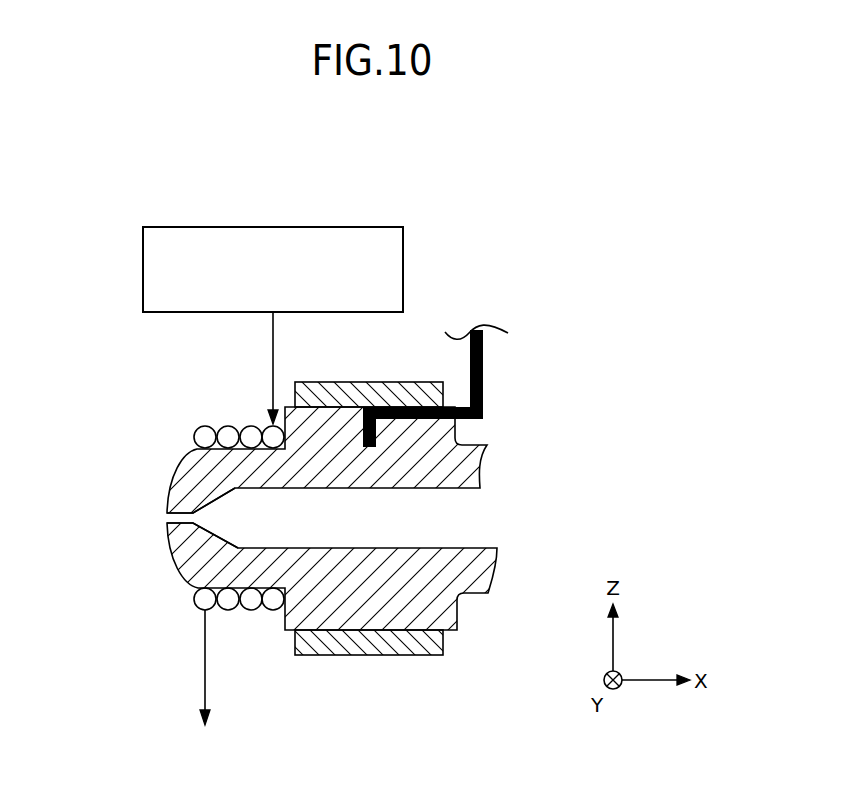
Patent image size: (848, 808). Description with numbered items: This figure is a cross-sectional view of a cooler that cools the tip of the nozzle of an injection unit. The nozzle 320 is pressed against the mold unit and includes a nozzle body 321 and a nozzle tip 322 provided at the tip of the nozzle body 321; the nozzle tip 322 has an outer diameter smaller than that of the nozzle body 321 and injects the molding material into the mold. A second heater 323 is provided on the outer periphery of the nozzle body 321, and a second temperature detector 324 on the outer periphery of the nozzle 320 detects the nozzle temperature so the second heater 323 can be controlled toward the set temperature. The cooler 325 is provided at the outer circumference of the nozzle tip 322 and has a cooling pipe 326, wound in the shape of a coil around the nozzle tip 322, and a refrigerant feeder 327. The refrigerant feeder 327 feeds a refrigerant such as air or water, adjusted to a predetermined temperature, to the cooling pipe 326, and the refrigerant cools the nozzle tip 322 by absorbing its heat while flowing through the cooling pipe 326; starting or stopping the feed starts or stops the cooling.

The nozzle 320 is at (267, 558).
The nozzle body 321 is at (305, 612).
The nozzle tip 322 is at (178, 557).
The second heater 323 is at (368, 641).
The second temperature detector 324 is at (362, 418).
The cooler 325 is at (273, 423).
The cooling pipe 326 is at (207, 426).
The refrigerant feeder 327 is at (335, 227).